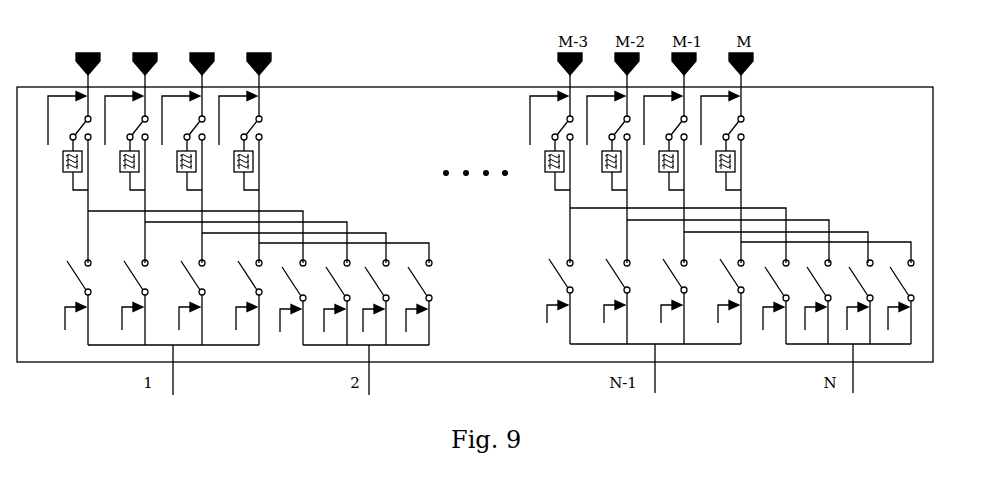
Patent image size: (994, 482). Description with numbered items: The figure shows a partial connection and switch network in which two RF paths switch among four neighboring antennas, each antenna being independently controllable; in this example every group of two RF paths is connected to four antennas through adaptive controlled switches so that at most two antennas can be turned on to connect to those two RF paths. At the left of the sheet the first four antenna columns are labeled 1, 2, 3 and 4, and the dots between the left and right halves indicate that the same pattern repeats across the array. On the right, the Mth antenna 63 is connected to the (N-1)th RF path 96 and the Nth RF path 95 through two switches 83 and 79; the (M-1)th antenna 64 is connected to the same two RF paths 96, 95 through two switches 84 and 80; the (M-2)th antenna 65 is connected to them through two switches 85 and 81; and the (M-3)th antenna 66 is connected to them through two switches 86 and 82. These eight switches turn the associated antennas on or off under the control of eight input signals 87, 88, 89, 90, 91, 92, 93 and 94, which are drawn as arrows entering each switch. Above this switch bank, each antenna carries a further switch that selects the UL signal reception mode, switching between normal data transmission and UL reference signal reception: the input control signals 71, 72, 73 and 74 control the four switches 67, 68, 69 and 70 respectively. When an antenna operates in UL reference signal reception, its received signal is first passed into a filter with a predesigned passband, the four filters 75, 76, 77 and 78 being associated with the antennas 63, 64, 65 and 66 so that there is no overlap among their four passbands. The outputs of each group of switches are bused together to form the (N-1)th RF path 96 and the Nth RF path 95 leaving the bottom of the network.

The antenna 1 is at (74, 148).
The antenna 2 is at (131, 148).
The antenna 3 is at (188, 148).
The antenna 4 is at (245, 148).
The Mth antenna 63 is at (741, 65).
The (M-1)th antenna 64 is at (684, 65).
The (M-2)th antenna 65 is at (627, 65).
The (M-3)th antenna 66 is at (570, 65).
The switch 67 is at (726, 127).
The switch 68 is at (669, 127).
The switch 69 is at (612, 127).
The switch 70 is at (555, 127).
The input control signal 71 is at (720, 112).
The input control signal 72 is at (663, 112).
The input control signal 73 is at (606, 112).
The input control signal 74 is at (549, 112).
The filter 75 is at (716, 165).
The filter 76 is at (659, 165).
The filter 77 is at (602, 165).
The filter 78 is at (545, 165).
The switch 79 is at (909, 302).
The switch 80 is at (866, 302).
The switch 81 is at (824, 302).
The switch 82 is at (784, 302).
The switch 83 is at (741, 301).
The switch 84 is at (684, 301).
The switch 85 is at (627, 301).
The switch 86 is at (570, 301).
The input signal 87 is at (901, 323).
The input signal 88 is at (859, 323).
The input signal 89 is at (818, 323).
The input signal 90 is at (775, 323).
The input signal 91 is at (724, 323).
The input signal 92 is at (667, 323).
The input signal 93 is at (610, 323).
The input signal 94 is at (553, 323).
The Nth RF path 95 is at (848, 368).
The (N-1)th RF path 96 is at (655, 368).